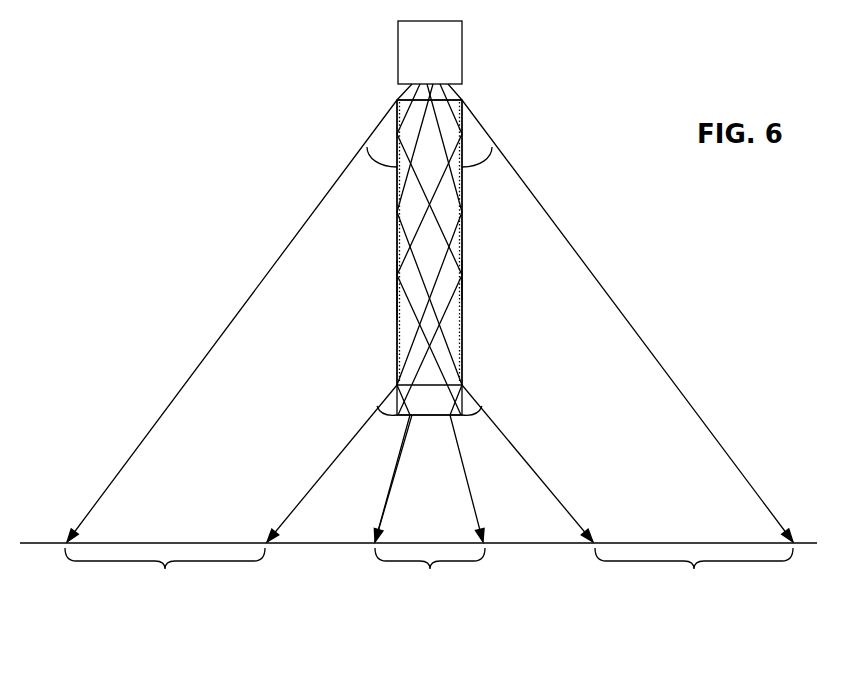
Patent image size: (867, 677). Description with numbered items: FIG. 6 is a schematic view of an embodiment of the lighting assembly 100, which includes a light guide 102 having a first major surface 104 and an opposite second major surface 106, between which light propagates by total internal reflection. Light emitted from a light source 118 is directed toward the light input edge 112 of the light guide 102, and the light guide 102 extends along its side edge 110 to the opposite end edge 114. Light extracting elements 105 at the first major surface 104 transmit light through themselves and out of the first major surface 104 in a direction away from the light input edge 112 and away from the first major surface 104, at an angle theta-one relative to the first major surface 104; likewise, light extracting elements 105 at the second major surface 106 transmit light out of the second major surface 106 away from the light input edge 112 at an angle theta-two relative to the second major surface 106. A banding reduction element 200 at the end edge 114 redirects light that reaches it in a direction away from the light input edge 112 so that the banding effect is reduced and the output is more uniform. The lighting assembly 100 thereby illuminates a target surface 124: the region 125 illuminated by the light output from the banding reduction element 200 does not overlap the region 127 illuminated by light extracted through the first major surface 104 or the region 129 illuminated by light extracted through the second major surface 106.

The lighting assembly 100 is at (208, 97).
The light guide 102 is at (453, 317).
The first major surface 104 is at (397, 253).
The light extracting elements 105 is at (397, 305).
The second major surface 106 is at (463, 247).
The side edge 110 is at (454, 340).
The light input edge 112 is at (398, 102).
The end edge 114 is at (462, 415).
The light source 118 is at (462, 47).
The target surface 124 is at (645, 543).
The region illuminated by banding reduction element 125 is at (430, 572).
The region illuminated through first major surface 127 is at (165, 571).
The region illuminated through second major surface 129 is at (694, 573).
The banding reduction element 200 is at (412, 418).